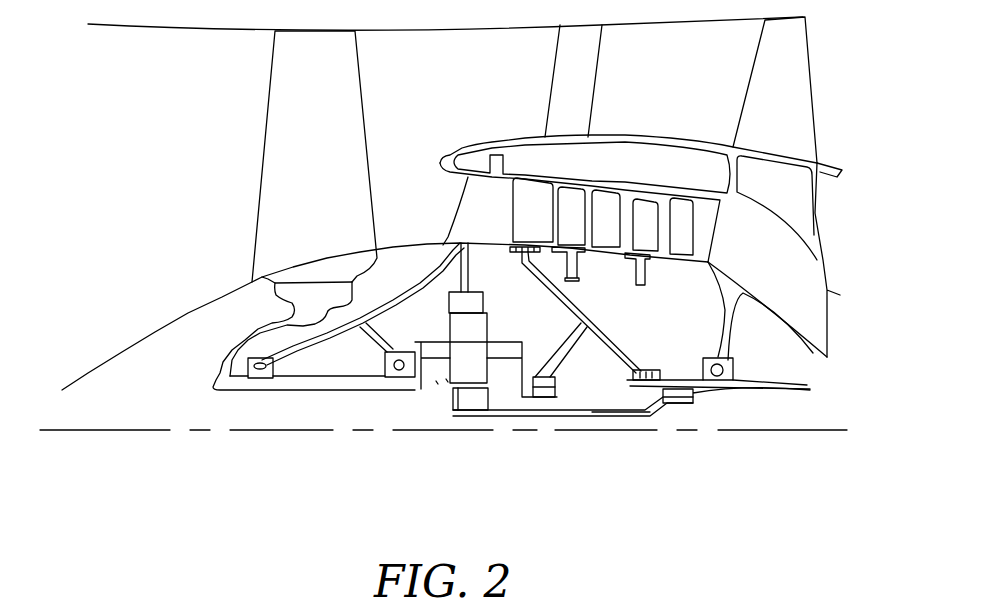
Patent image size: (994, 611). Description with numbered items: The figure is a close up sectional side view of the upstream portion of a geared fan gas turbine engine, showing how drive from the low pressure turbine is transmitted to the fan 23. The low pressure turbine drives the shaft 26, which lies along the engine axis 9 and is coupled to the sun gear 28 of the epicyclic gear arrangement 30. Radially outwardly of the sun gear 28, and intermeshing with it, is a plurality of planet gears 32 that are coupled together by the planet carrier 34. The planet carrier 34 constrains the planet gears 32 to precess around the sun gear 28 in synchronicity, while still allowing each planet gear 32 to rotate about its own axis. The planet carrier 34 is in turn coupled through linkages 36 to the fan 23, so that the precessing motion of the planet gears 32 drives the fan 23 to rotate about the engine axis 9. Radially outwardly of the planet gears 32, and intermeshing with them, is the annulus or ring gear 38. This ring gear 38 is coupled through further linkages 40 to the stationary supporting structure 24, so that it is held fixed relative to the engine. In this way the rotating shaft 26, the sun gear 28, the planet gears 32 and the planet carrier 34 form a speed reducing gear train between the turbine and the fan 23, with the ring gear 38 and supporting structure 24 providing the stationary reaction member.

The engine axis 9 is at (152, 431).
The fan 23 is at (277, 136).
The stationary supporting structure 24 is at (470, 212).
The shaft 26 is at (592, 413).
The sun gear 28 is at (472, 400).
The epicyclic gear arrangement 30 is at (437, 383).
The planet gears 32 is at (447, 380).
The planet carrier 34 is at (475, 411).
The linkages 36 is at (420, 389).
The ring gear 38 is at (470, 305).
The linkages 40 is at (468, 273).